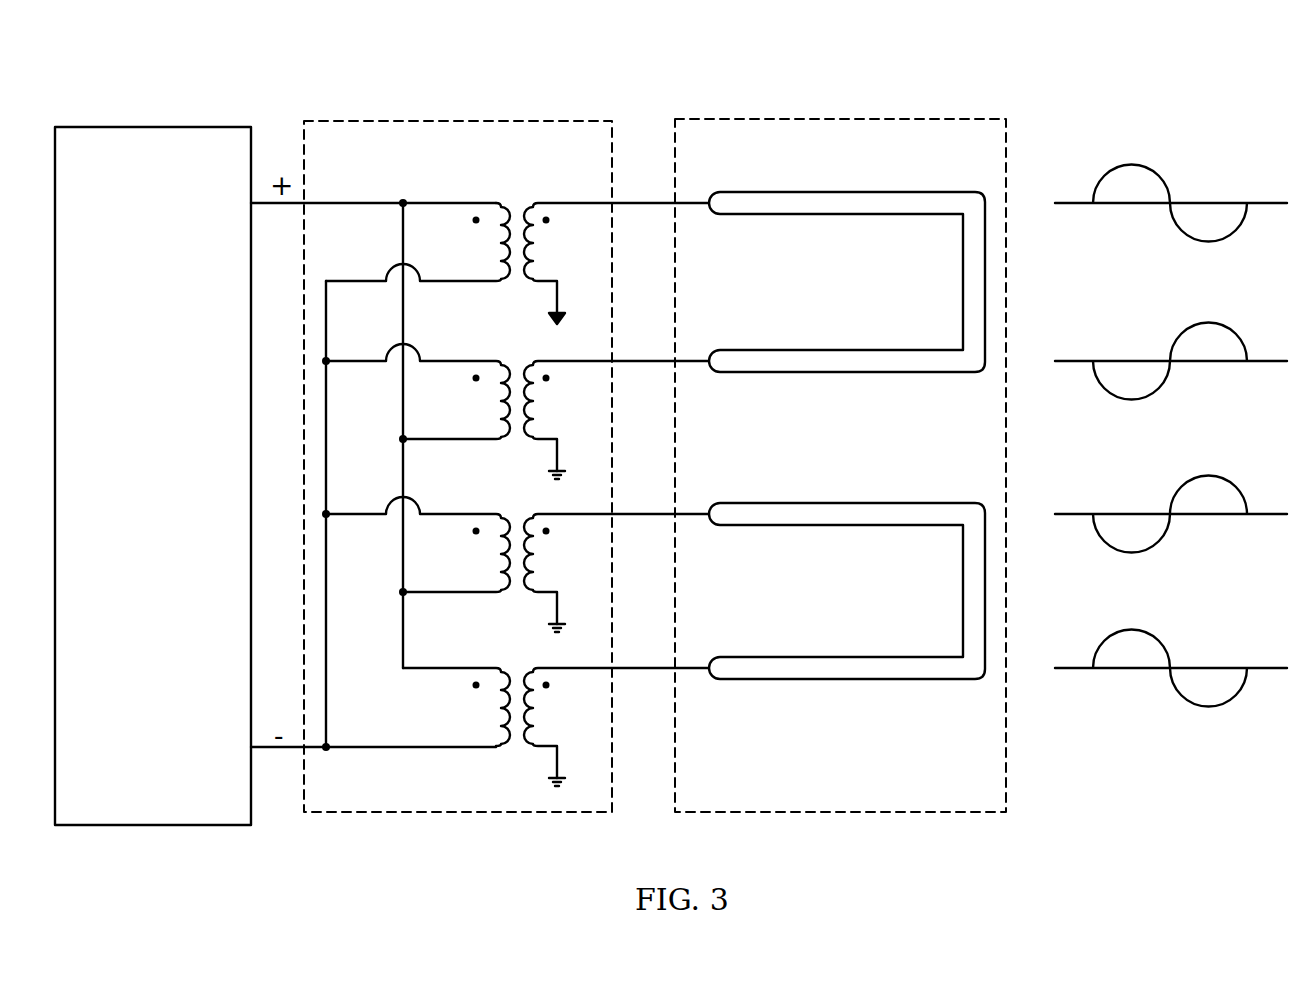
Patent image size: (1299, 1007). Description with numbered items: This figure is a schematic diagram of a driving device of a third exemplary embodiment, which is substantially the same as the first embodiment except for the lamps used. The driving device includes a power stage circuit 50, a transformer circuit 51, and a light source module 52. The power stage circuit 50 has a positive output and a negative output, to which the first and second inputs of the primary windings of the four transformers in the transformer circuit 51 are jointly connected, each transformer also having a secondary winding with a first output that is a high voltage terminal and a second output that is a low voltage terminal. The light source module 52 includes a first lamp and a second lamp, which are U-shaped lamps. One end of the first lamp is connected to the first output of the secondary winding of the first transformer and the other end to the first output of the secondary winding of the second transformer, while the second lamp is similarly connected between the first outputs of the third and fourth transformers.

The power stage circuit 50 is at (133, 127).
The transformer circuit 51 is at (440, 121).
The light source module 52 is at (785, 119).